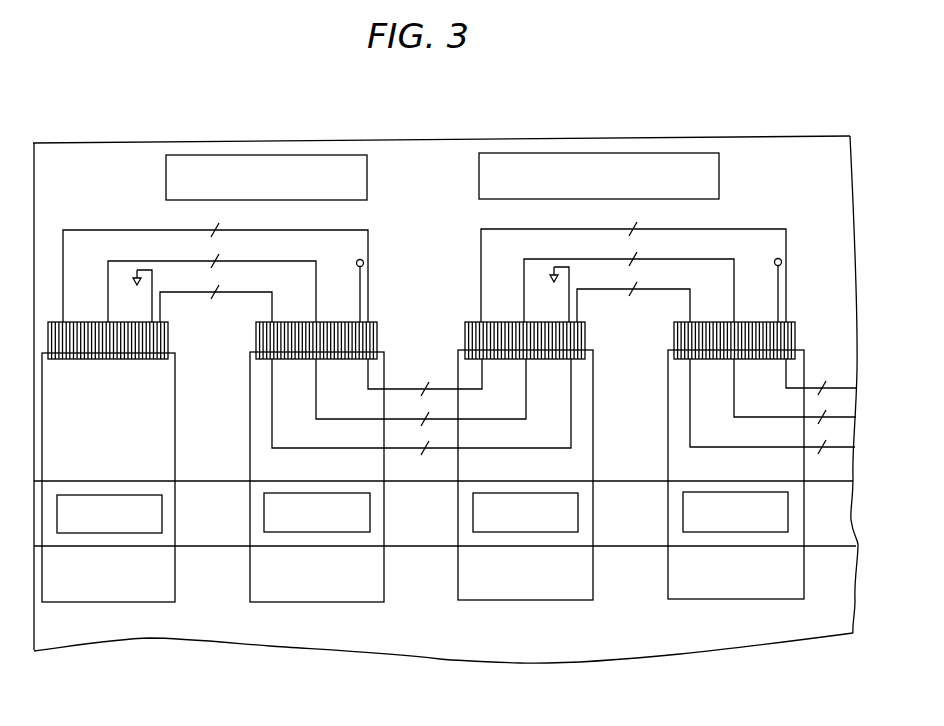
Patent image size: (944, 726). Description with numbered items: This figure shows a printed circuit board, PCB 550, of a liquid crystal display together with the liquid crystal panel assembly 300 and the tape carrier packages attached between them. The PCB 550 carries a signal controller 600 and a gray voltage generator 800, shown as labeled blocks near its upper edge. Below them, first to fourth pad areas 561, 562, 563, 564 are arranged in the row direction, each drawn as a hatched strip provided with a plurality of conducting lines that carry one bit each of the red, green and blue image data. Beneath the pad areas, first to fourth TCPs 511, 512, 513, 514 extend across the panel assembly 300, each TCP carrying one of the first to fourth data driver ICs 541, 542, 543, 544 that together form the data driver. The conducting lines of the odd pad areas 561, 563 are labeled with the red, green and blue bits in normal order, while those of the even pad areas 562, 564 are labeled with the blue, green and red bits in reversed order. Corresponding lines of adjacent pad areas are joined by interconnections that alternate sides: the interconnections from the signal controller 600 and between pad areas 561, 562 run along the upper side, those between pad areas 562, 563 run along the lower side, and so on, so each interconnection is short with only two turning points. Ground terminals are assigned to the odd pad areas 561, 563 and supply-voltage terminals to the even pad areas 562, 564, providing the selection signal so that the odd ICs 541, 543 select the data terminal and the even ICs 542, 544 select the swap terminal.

The liquid crystal panel assembly 300 is at (213, 624).
The first TCP 511 is at (175, 502).
The second TCP 512 is at (384, 501).
The third TCP 513 is at (593, 500).
The fourth TCP 514 is at (804, 499).
The first data driver IC 541 is at (117, 533).
The second data driver IC 542 is at (323, 532).
The third data driver IC 543 is at (531, 532).
The fourth data driver IC 544 is at (741, 532).
The PCB 550 is at (550, 137).
The first pad area 561 is at (168, 345).
The second pad area 562 is at (377, 345).
The third pad area 563 is at (585, 345).
The fourth pad area 564 is at (795, 345).
The signal controller 600 is at (166, 178).
The gray voltage generator 800 is at (719, 176).